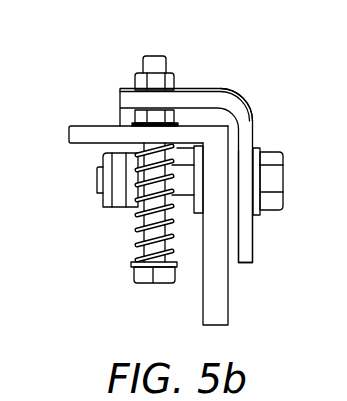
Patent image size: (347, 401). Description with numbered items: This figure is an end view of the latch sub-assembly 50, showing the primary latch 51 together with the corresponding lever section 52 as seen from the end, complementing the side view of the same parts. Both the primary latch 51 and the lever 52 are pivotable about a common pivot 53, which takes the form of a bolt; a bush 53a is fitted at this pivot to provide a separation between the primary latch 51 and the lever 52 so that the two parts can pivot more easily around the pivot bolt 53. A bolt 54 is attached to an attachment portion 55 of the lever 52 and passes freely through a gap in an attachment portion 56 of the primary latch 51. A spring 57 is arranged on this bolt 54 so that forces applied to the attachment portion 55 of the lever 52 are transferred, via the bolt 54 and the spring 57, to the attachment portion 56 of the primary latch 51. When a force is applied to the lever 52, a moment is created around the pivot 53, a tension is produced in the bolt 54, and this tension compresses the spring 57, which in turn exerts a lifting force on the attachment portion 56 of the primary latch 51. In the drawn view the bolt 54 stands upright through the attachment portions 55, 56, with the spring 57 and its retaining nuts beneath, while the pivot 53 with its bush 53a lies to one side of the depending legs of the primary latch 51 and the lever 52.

The mounting bracket assembly 50 is at (286, 76).
The primary latch 51 is at (230, 308).
The lever section 52 is at (253, 247).
The pivot 53 is at (284, 178).
The bush 53a is at (236, 145).
The bolt 54 is at (151, 56).
The attachment portion of lever 55 is at (119, 100).
The attachment portion of primary latch 56 is at (68, 126).
The spring 57 is at (138, 233).